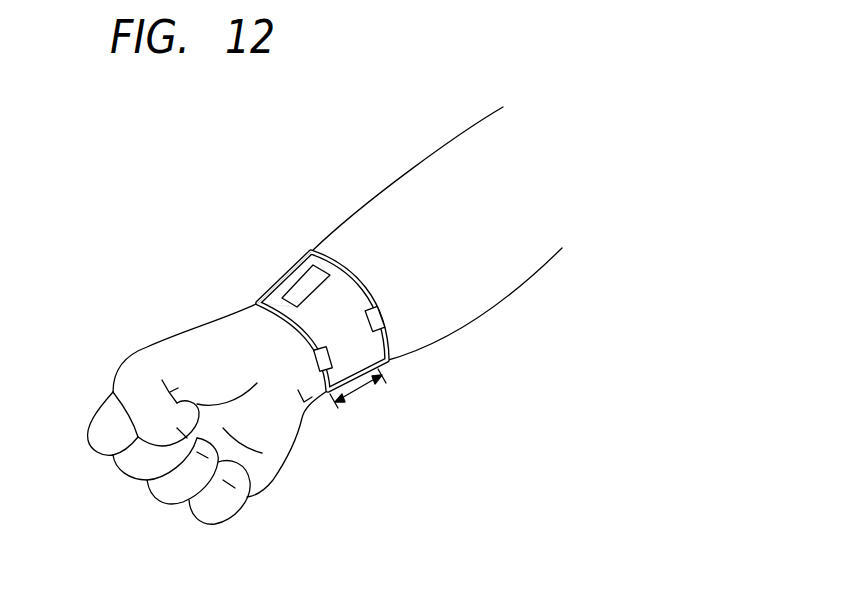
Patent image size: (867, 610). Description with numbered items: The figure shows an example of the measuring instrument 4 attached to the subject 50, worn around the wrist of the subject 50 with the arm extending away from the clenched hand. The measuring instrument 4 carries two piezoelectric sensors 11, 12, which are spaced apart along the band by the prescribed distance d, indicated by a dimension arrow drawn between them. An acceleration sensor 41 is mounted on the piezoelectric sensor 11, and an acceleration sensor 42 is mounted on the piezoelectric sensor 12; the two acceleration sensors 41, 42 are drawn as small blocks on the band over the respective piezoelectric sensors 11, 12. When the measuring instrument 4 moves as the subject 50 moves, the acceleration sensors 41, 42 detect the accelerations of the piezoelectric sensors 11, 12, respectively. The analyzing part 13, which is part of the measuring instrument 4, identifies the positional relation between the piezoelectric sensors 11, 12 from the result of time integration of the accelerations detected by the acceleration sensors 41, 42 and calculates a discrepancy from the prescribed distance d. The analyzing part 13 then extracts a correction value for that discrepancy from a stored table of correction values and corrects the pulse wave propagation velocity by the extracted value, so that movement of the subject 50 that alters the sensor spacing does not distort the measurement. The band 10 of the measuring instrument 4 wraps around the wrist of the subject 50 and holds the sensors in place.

The measuring instrument 4 is at (201, 150).
The band 10 is at (366, 344).
The piezoelectric sensor 11 is at (304, 245).
The piezoelectric sensor 12 is at (250, 296).
The analyzing part 13 is at (300, 287).
The acceleration sensor 41 is at (384, 320).
The acceleration sensor 42 is at (328, 352).
The subject 50 is at (437, 177).
The prescribed distance d is at (358, 392).